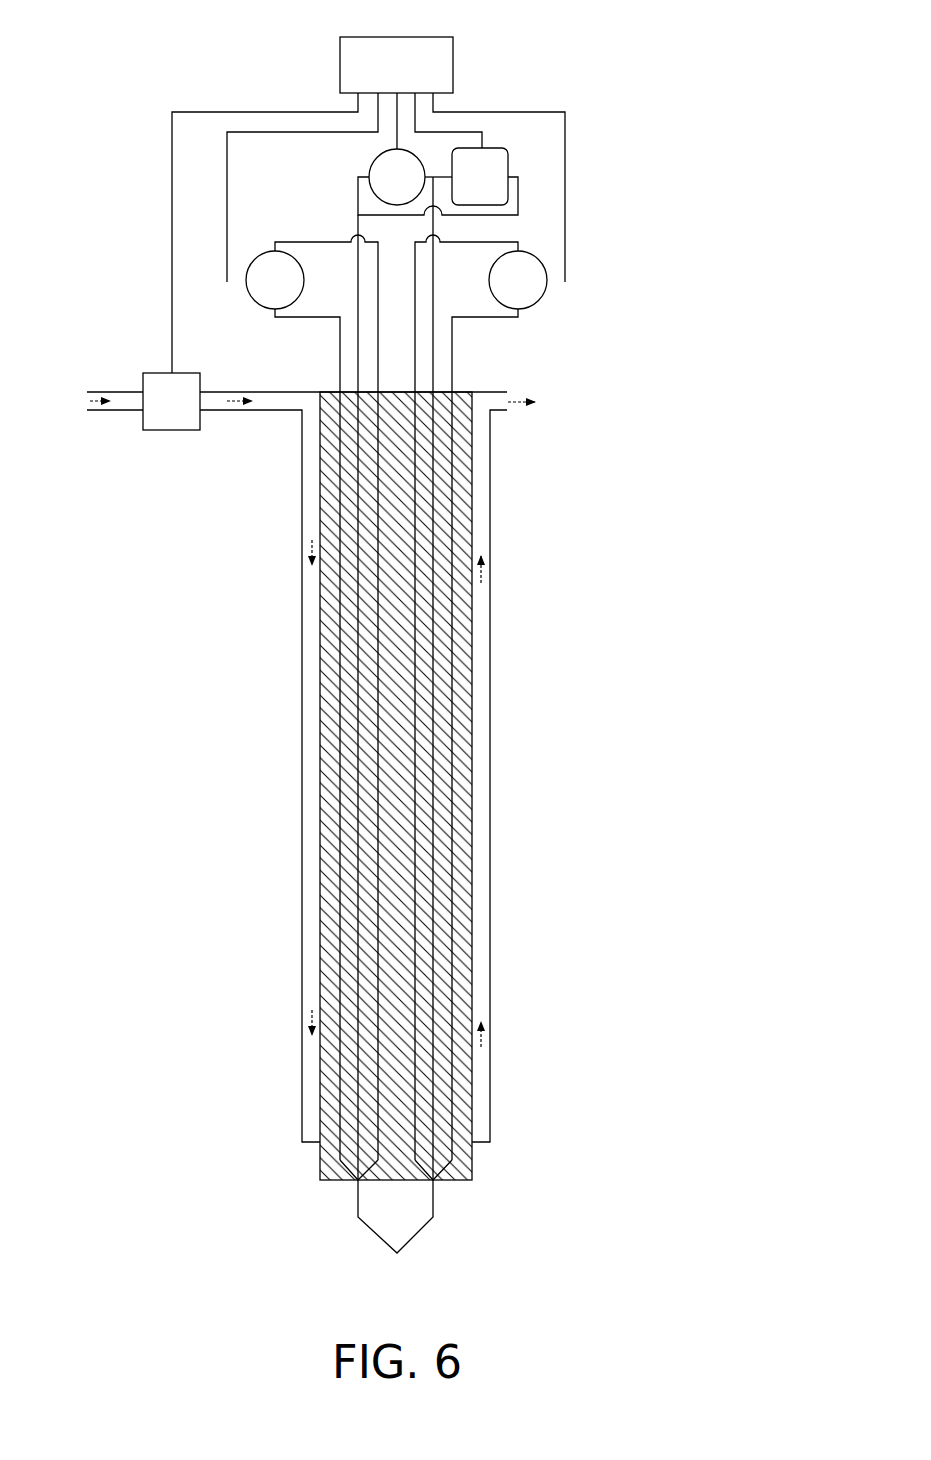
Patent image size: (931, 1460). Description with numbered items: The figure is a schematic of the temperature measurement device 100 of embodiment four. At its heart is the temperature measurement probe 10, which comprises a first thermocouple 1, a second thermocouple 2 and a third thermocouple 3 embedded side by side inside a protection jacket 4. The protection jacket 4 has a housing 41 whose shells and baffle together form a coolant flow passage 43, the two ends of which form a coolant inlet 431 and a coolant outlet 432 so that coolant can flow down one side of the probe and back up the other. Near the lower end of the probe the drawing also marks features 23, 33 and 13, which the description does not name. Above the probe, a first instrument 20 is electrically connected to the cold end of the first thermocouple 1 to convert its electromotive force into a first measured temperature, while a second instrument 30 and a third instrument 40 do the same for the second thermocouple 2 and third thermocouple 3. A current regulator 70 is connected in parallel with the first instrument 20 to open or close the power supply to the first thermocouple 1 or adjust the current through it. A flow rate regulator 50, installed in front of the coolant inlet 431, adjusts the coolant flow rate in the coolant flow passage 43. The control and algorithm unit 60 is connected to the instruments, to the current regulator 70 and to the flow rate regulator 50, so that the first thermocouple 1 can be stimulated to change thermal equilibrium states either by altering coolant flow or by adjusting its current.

The temperature measurement device 100 is at (158, 30).
The control and algorithm unit 60 is at (427, 65).
The first instrument 20 is at (387, 177).
The current regulator 70 is at (473, 177).
The first thermocouple 1 is at (358, 230).
The second instrument 30 is at (273, 270).
The third instrument 40 is at (520, 270).
The second thermocouple 2 is at (332, 318).
The third thermocouple 3 is at (465, 320).
The first pipe outlet end 23 is at (358, 1180).
The second pipe outlet end 33 is at (433, 1180).
The tube tip 13 is at (397, 1253).
The flow rate regulator 50 is at (170, 412).
The temperature measurement probe 10 is at (512, 533).
The protection jacket 4 is at (406, 765).
The coolant inlet 431 is at (302, 403).
The coolant outlet 432 is at (492, 402).
The housing 41 is at (490, 693).
The coolant flow passage 43 is at (482, 635).